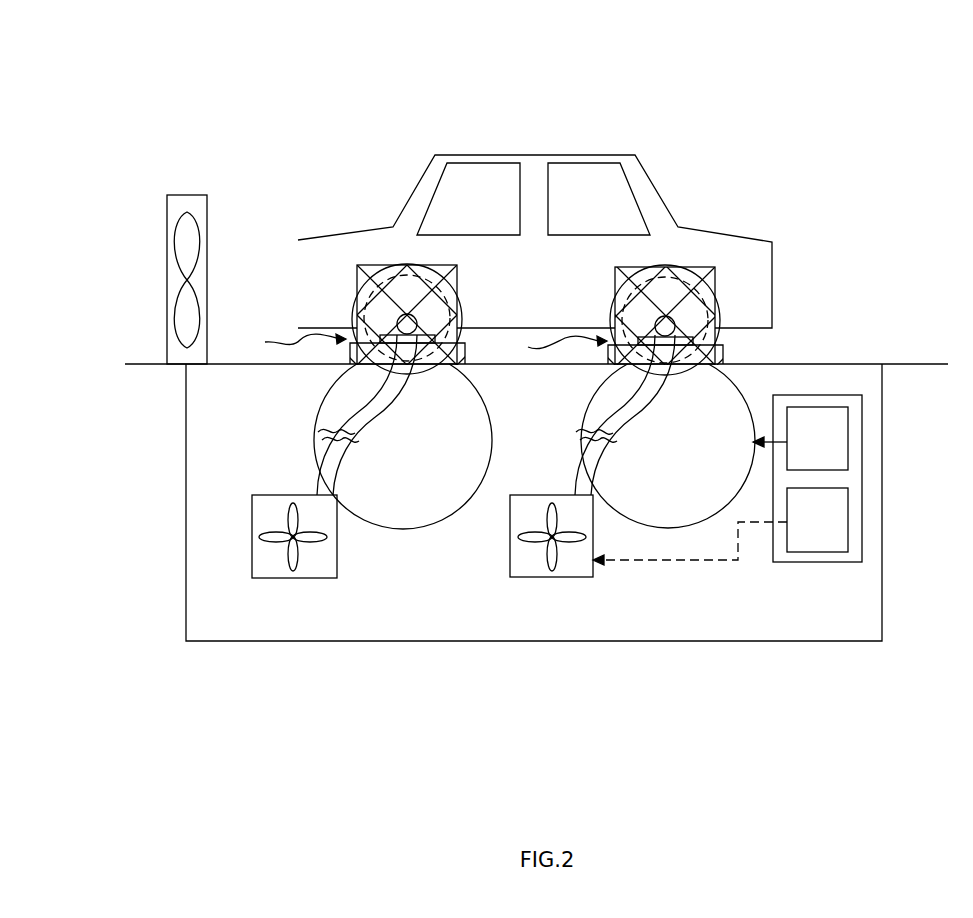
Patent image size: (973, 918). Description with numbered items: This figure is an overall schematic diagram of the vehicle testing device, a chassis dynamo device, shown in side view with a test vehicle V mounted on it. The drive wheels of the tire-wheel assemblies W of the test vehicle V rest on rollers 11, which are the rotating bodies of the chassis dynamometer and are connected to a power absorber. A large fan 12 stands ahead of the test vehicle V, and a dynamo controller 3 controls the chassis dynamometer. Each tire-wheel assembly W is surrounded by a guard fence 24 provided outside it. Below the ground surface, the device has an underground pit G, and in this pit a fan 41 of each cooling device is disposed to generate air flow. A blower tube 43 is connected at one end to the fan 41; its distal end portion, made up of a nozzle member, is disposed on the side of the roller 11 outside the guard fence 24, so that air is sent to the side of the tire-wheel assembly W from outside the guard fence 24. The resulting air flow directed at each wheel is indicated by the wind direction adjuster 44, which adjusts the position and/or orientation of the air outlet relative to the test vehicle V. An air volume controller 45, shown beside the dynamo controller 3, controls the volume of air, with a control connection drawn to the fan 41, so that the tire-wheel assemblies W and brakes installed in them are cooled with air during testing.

The test vehicle V is at (583, 155).
The tire-wheel assembly W is at (358, 305).
The guard fence 24 is at (373, 267).
The large fan 12 is at (186, 195).
The wind direction adjuster 44 is at (423, 343).
The blower tube 43 is at (373, 408).
The roller 11 is at (407, 529).
The fan 41 is at (293, 578).
The dynamo controller 3 is at (848, 440).
The air volume controller 45 is at (848, 521).
The underground pit G is at (832, 599).